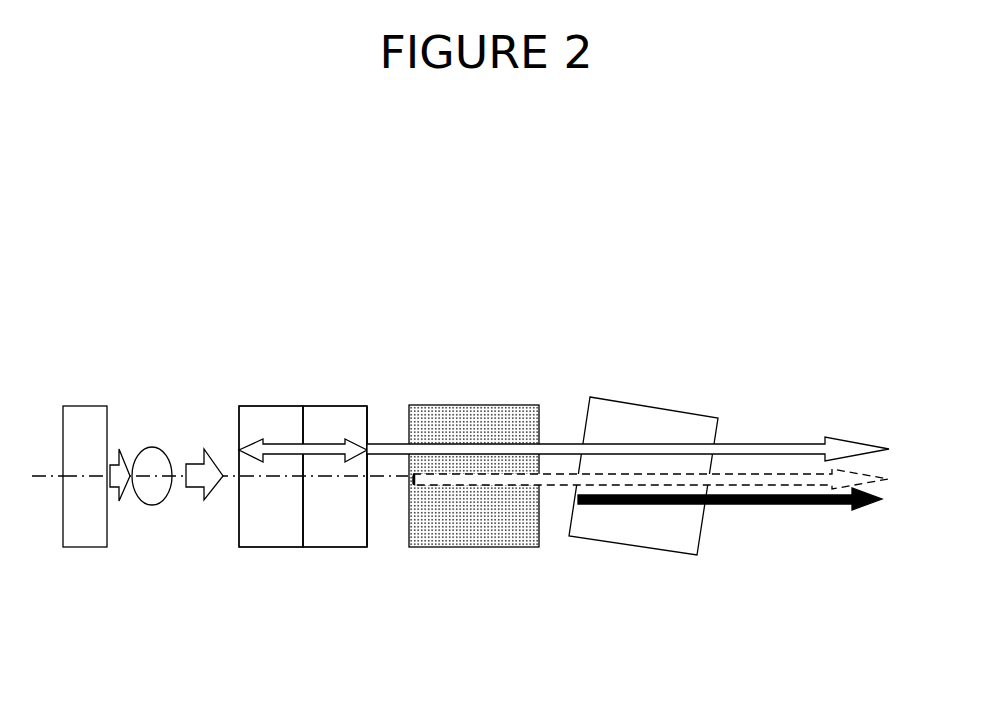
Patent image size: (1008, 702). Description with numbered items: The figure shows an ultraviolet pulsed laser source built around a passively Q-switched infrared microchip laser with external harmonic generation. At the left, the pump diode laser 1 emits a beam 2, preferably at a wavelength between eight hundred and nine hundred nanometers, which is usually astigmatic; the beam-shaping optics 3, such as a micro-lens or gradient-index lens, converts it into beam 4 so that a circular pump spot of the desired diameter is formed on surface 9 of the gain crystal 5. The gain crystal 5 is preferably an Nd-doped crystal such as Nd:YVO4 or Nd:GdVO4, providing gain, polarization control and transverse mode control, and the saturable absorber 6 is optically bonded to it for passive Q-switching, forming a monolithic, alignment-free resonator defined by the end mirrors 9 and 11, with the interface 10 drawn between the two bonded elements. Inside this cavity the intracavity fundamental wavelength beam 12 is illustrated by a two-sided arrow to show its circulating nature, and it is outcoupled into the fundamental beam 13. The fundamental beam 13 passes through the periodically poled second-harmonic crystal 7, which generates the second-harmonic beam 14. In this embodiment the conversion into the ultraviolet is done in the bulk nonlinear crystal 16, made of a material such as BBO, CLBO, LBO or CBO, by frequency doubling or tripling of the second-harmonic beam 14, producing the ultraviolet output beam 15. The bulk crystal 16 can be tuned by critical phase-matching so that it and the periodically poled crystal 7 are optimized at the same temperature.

The pump diode laser 1 is at (82, 402).
The pump beam 2 is at (118, 431).
The beam-shaping optics 3 is at (152, 413).
The shaped pump beam 4 is at (206, 423).
The gain crystal 5 is at (277, 411).
The saturable absorber 6 is at (340, 411).
The second-harmonic crystal 7 is at (468, 413).
The end mirror 9 is at (228, 538).
The central mirror / partition 10 is at (294, 530).
The end mirror 11 is at (380, 533).
The intracavity fundamental wavelength beam 12 is at (324, 465).
The fundamental beam 13 is at (637, 443).
The second-harmonic beam 14 is at (667, 476).
The output signal beam 15 is at (742, 506).
The bulk nonlinear crystal 16 is at (638, 413).